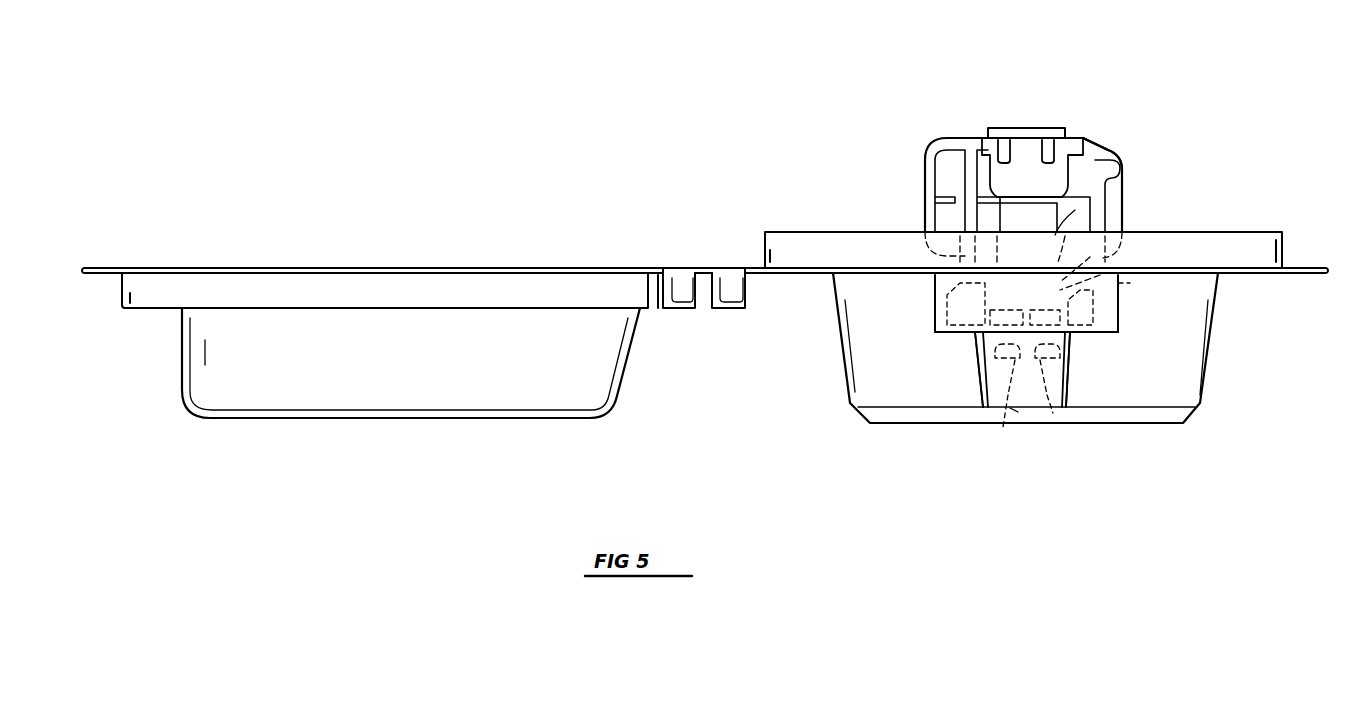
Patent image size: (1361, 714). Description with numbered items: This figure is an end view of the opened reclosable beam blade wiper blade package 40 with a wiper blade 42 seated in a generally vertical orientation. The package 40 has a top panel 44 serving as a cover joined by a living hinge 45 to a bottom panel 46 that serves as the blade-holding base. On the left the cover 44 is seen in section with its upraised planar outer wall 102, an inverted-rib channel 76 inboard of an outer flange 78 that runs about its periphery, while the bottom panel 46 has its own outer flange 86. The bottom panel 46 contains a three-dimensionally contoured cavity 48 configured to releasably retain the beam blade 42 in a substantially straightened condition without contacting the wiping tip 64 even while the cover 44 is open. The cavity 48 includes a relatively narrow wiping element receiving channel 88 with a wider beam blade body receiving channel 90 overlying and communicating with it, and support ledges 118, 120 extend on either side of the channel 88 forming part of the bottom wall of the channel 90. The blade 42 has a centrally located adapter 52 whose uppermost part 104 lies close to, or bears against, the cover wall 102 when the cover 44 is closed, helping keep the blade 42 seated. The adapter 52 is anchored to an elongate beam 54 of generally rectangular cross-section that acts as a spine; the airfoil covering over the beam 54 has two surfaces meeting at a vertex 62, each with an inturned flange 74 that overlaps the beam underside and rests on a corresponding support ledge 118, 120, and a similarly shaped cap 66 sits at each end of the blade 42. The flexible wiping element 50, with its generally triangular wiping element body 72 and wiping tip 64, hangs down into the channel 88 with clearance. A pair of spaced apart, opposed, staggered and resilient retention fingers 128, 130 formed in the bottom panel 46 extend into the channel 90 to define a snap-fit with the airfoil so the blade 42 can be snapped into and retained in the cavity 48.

The beam blade wiper blade package 40 is at (704, 110).
The wiper blade 42 is at (1128, 150).
The top panel 44 is at (468, 425).
The living hinge 45 is at (708, 318).
The bottom panel 46 is at (927, 432).
The cavity 48 is at (826, 229).
The wiping element 50 is at (943, 509).
The adapter 52 is at (1085, 137).
The beam 54 is at (1100, 275).
The vertex 62 is at (1075, 210).
The wiping tip 64 is at (1003, 427).
The cap 66 is at (1090, 257).
The wiping element body 72 is at (1053, 413).
The inturned flange 74 is at (1078, 333).
The channel 76 is at (975, 340).
The outer flange 78 is at (110, 256).
The outer flange 86 is at (1322, 268).
The wiping element receiving channel 88 is at (1010, 409).
The beam blade body receiving channel 90 is at (1118, 314).
The outer wall 102 is at (262, 419).
The uppermost part of the adapter 104 is at (1040, 70).
The support ledge 118 is at (1093, 333).
The support ledge 120 is at (987, 332).
The beam blade retention finger 128 is at (1130, 283).
The beam blade retention finger 130 is at (935, 287).